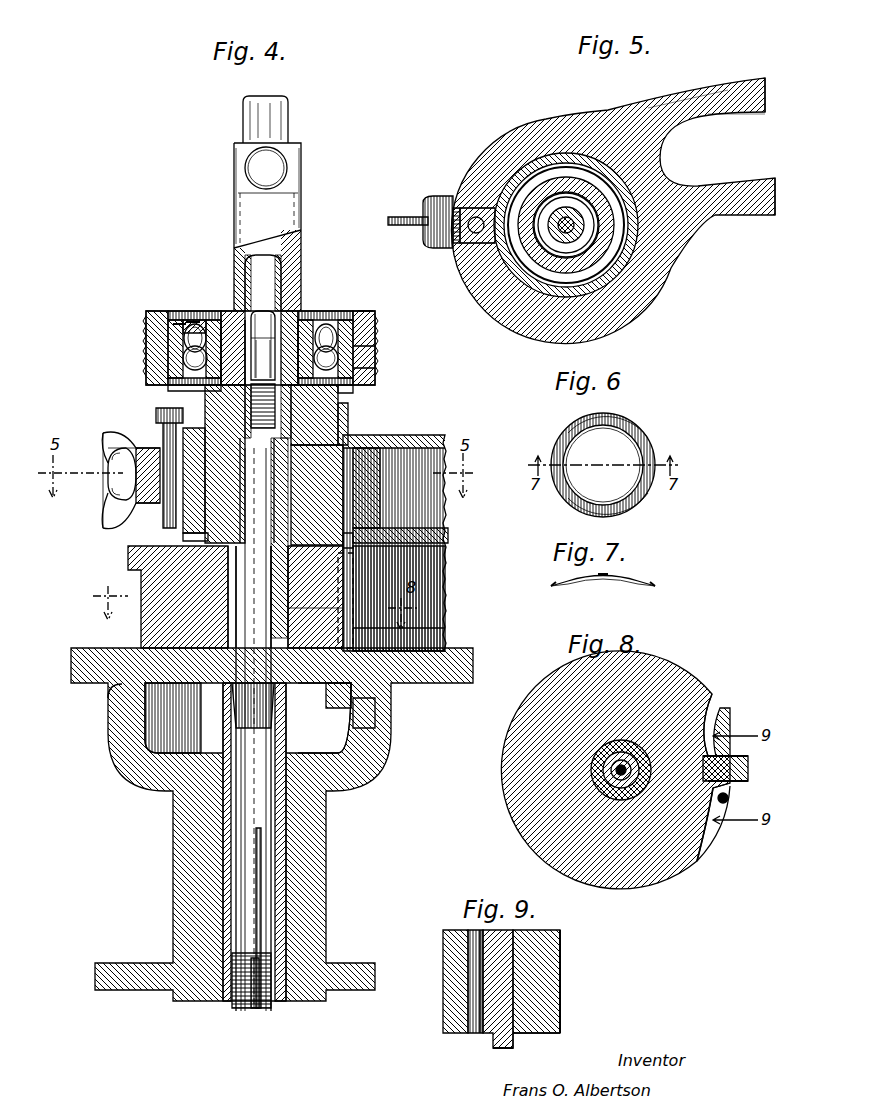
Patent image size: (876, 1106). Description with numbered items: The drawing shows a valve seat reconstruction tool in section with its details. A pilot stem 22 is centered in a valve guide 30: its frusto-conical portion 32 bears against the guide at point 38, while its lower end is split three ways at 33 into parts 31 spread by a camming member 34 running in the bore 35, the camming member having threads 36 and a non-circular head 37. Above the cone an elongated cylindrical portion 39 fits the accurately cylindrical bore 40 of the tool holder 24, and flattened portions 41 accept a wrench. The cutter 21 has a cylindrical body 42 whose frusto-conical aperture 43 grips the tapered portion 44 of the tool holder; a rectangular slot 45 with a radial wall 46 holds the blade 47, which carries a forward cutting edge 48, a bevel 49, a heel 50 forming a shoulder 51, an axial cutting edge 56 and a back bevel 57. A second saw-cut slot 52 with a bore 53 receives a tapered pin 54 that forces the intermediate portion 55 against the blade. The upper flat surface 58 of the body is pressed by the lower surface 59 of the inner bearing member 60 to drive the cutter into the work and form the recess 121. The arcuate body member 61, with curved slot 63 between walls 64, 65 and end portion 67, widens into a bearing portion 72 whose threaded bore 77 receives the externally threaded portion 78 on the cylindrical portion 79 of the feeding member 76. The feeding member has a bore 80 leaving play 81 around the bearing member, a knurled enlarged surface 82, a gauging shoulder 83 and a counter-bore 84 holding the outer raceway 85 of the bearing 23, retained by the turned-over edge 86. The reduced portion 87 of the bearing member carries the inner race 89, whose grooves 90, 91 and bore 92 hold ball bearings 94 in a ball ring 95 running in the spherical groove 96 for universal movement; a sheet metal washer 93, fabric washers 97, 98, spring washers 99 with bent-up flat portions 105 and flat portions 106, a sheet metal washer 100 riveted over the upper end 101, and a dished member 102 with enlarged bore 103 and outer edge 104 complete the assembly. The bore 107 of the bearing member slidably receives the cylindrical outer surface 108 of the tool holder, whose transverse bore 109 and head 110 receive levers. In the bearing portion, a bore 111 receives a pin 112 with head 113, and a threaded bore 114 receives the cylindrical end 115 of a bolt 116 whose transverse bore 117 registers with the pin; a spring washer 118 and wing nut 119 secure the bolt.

In FIG. 4, the cutter 21 is at (125, 630).
In FIG. 4, the pilot stem 22 is at (236, 800).
In FIG. 5, the pilot stem 22 is at (572, 235).
In FIG. 8, the pilot stem 22 is at (603, 780).
In FIG. 4, the bearing 23 is at (378, 324).
In FIG. 4, the tool holder 24 is at (275, 262).
In FIG. 8, the tool holder 24 is at (605, 795).
In FIG. 4, the valve guide 30 is at (275, 845).
In FIG. 4, the split portions 31 is at (224, 992).
In FIG. 4, the frusto-conical portion 32 is at (265, 690).
In FIG. 4, the split 33 is at (254, 900).
In FIG. 4, the camming member 34 is at (247, 1000).
In FIG. 5, the camming member 34 is at (565, 222).
In FIG. 8, the camming member 34 is at (605, 768).
In FIG. 4, the bore 35 is at (252, 790).
In FIG. 4, the threads 36 is at (330, 390).
In FIG. 4, the non-circular head 37 is at (265, 337).
In FIG. 4, the point 38 is at (280, 712).
In FIG. 4, the elongated cylindrical portion 39 is at (280, 580).
In FIG. 4, the cylindrical bore 40 is at (282, 612).
In FIG. 4, the flattened portions 41 is at (330, 400).
In FIG. 4, the cutter body 42 is at (135, 580).
In FIG. 8, the cutter body 42 is at (505, 735).
In FIG. 4, the frusto-conical aperture 43 is at (105, 604).
In FIG. 4, the frusto-conical portion 44 is at (205, 660).
In FIG. 8, the slot 45 is at (712, 712).
In FIG. 9, the slot 45 is at (510, 955).
In FIG. 8, the wall 46 is at (725, 800).
In FIG. 4, the blade 47 is at (440, 612).
In FIG. 8, the blade 47 is at (742, 755).
In FIG. 9, the blade 47 is at (505, 985).
In FIG. 4, the forward cutting edge 48 is at (330, 660).
In FIG. 9, the forward cutting edge 48 is at (490, 1040).
In FIG. 9, the bevel 49 is at (505, 1038).
In FIG. 9, the heel 50 is at (515, 1027).
In FIG. 9, the shoulder 51 is at (510, 1010).
In FIG. 8, the second slot 52 is at (700, 815).
In FIG. 9, the second slot 52 is at (455, 950).
In FIG. 9, the bore 53 is at (465, 996).
In FIG. 8, the tapered pin 54 is at (690, 830).
In FIG. 9, the tapered pin 54 is at (462, 1025).
In FIG. 8, the intermediate portion 55 is at (722, 791).
In FIG. 4, the cutting edge 56 is at (437, 634).
In FIG. 8, the cutting edge 56 is at (742, 773).
In FIG. 8, the bevel 57 is at (740, 752).
In FIG. 4, the upper flat surface 58 is at (135, 545).
In FIG. 4, the lower surface 59 is at (345, 540).
In FIG. 4, the inner bearing member 60 is at (372, 528).
In FIG. 5, the inner bearing member 60 is at (575, 275).
In FIG. 4, the body member 61 is at (372, 498).
In FIG. 5, the body member 61 is at (745, 72).
In FIG. 5, the curved slot 63 is at (745, 106).
In FIG. 5, the curved wall 64 is at (760, 205).
In FIG. 5, the curved wall 65 is at (690, 80).
In FIG. 5, the end portion 67 is at (656, 150).
In FIG. 5, the bearing portion 72 is at (530, 110).
In FIG. 4, the feeding member 76 is at (138, 322).
In FIG. 4, the bore 77 is at (420, 440).
In FIG. 4, the externally threaded portion 78 is at (340, 420).
In FIG. 5, the externally threaded portion 78 is at (512, 290).
In FIG. 4, the cylindrical portion 79 is at (180, 420).
In FIG. 4, the bore 80 is at (176, 528).
In FIG. 4, the play 81 is at (197, 392).
In FIG. 4, the enlarged cylindrical surface 82 is at (360, 310).
In FIG. 4, the annular shoulder 83 is at (345, 380).
In FIG. 4, the counter-bore 84 is at (215, 306).
In FIG. 4, the outer raceway 85 is at (176, 356).
In FIG. 4, the upper edge 86 is at (330, 312).
In FIG. 4, the reduced cylindrical portion 87 is at (268, 344).
In FIG. 4, the inner race member 89 is at (213, 312).
In FIG. 4, the circular groove 90 is at (165, 305).
In FIG. 4, the circular groove 91 is at (160, 379).
In FIG. 4, the bore 92 is at (348, 338).
In FIG. 4, the sheet metal washer 93 is at (248, 400).
In FIG. 4, the ball bearings 94 is at (367, 358).
In FIG. 4, the ball ring 95 is at (160, 372).
In FIG. 4, the concave groove 96 is at (168, 312).
In FIG. 4, the flexible fabric washer 97 is at (240, 445).
In FIG. 4, the second flexible fabric washer 98 is at (335, 304).
In FIG. 4, the spring washers 99 is at (312, 318).
In FIG. 6, the spring washers 99 is at (560, 445).
In FIG. 7, the spring washers 99 is at (625, 572).
In FIG. 4, the sheet metal washer 100 is at (180, 312).
In FIG. 4, the upper end 101 is at (188, 312).
In FIG. 4, the dished sheet metal member 102 is at (170, 312).
In FIG. 4, the enlarged bore 103 is at (295, 305).
In FIG. 4, the outer edge 104 is at (365, 303).
In FIG. 6, the flat portions 105 is at (612, 415).
In FIG. 7, the flat portions 105 is at (595, 570).
In FIG. 7, the flat portions 106 is at (547, 580).
In FIG. 4, the bore 107 is at (238, 320).
In FIG. 4, the cylindrical outer surface 108 is at (293, 186).
In FIG. 5, the cylindrical outer surface 108 is at (580, 245).
In FIG. 4, the transverse bore 109 is at (273, 158).
In FIG. 4, the non-circular head 110 is at (280, 113).
In FIG. 4, the bore 111 is at (128, 462).
In FIG. 4, the pin 112 is at (100, 490).
In FIG. 5, the pin 112 is at (466, 209).
In FIG. 4, the head 113 is at (156, 412).
In FIG. 4, the threaded bore 114 is at (128, 498).
In FIG. 5, the threaded bore 114 is at (460, 235).
In FIG. 4, the cylindrical end 115 is at (95, 427).
In FIG. 5, the cylindrical end 115 is at (480, 230).
In FIG. 4, the threaded bolt 116 is at (100, 470).
In FIG. 5, the threaded bolt 116 is at (420, 200).
In FIG. 4, the transverse bore 117 is at (95, 520).
In FIG. 5, the transverse bore 117 is at (462, 200).
In FIG. 4, the spring washer 118 is at (100, 462).
In FIG. 5, the spring washer 118 is at (447, 205).
In FIG. 4, the wing nut 119 is at (95, 425).
In FIG. 5, the wing nut 119 is at (380, 213).
In FIG. 4, the recess 121 is at (108, 678).